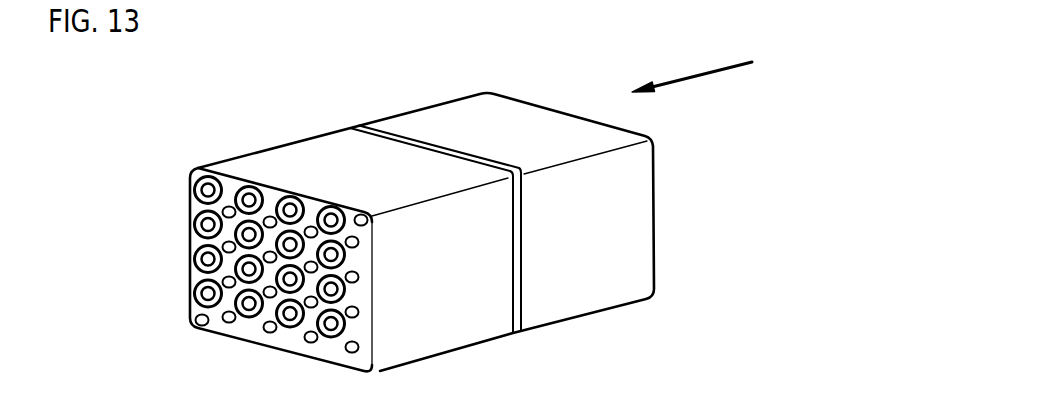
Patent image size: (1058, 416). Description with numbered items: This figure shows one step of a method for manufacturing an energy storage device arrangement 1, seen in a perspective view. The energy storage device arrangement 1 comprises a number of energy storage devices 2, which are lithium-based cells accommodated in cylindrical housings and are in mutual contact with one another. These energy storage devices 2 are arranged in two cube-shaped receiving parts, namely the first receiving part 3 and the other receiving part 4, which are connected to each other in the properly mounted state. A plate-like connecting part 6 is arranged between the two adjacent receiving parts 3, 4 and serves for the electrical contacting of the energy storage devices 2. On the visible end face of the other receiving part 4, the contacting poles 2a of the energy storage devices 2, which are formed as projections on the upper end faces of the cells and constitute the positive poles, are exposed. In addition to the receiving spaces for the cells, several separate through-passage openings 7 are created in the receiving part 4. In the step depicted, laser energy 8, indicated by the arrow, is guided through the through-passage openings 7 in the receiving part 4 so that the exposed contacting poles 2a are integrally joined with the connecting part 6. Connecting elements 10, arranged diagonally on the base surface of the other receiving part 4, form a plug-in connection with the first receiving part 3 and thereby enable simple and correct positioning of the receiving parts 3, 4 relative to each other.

The energy storage device arrangement 1 is at (286, 115).
The energy storage device 2 is at (328, 330).
The contacting pole 2a is at (310, 341).
The first receiving part 3 is at (253, 168).
The other receiving part 4 is at (440, 118).
The connecting part 6 is at (518, 313).
The through-passage opening 7 is at (227, 319).
The laser energy 8 is at (698, 75).
The connecting element 10 is at (362, 212).